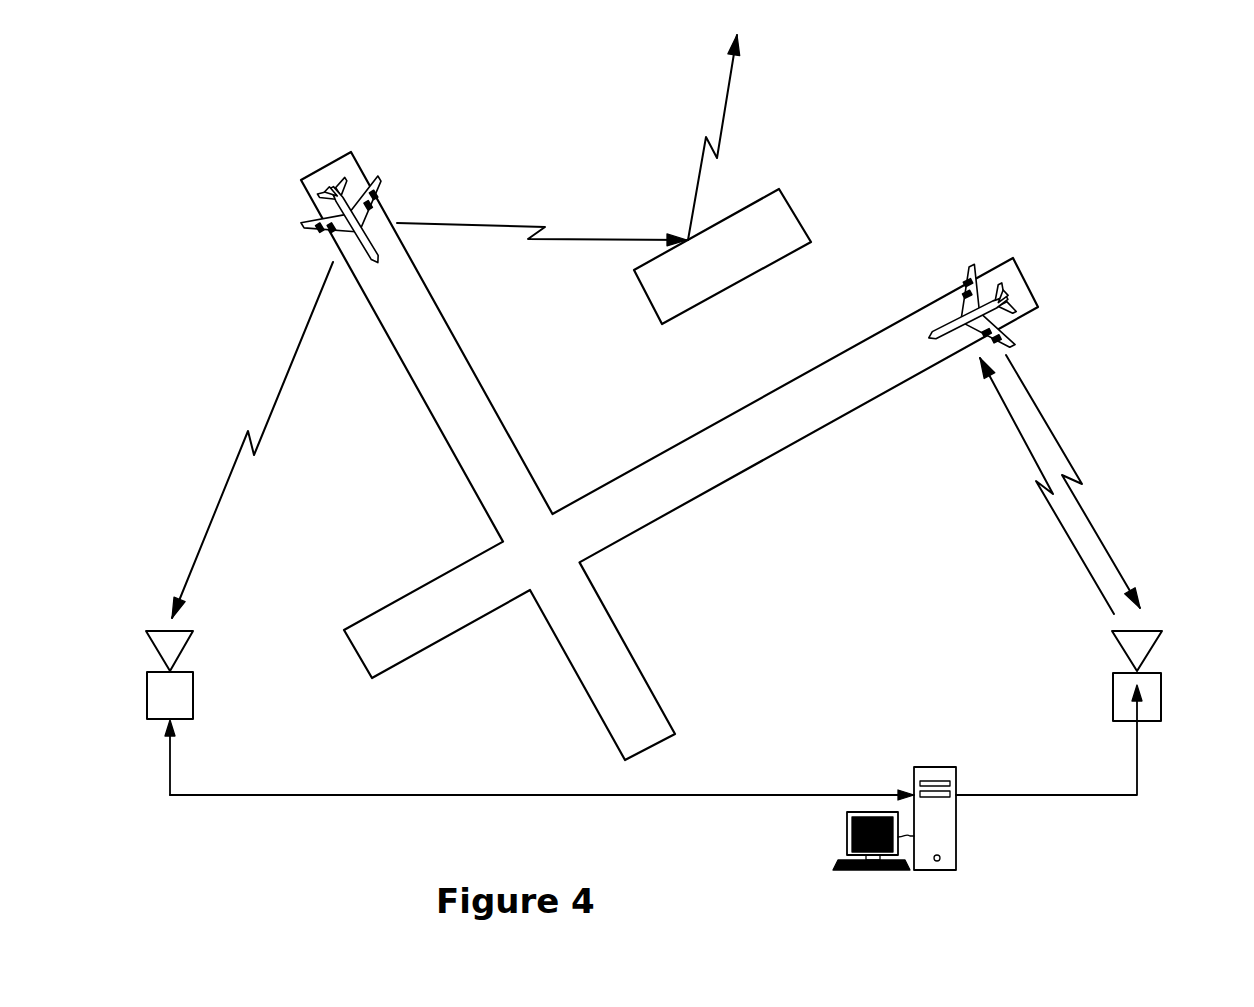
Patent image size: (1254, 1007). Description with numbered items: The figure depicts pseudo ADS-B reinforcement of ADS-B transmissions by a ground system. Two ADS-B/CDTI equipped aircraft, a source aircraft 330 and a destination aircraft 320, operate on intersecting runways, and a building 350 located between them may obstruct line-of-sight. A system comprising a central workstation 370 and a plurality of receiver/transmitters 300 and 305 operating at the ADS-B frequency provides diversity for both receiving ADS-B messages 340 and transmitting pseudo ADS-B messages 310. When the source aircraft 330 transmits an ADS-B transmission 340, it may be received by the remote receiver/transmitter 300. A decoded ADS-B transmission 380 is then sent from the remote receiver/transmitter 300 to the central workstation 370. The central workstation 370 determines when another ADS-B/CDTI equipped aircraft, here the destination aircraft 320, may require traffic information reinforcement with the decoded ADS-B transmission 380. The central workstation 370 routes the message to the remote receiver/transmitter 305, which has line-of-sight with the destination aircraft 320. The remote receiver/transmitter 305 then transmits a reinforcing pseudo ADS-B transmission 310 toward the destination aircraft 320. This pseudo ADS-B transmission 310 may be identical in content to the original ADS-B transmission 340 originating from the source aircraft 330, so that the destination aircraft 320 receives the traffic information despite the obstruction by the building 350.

The remote receiver/transmitter 300 is at (193, 697).
The remote receiver/transmitter 305 is at (1161, 697).
The pseudo ADS-B transmission 310 is at (1067, 540).
The destination aircraft 320 is at (1010, 298).
The source aircraft 330 is at (387, 190).
The ADS-B transmission 340 is at (608, 238).
The building 350 is at (798, 215).
The central workstation 370 is at (956, 823).
The decoded ADS-B transmission 380 is at (170, 780).